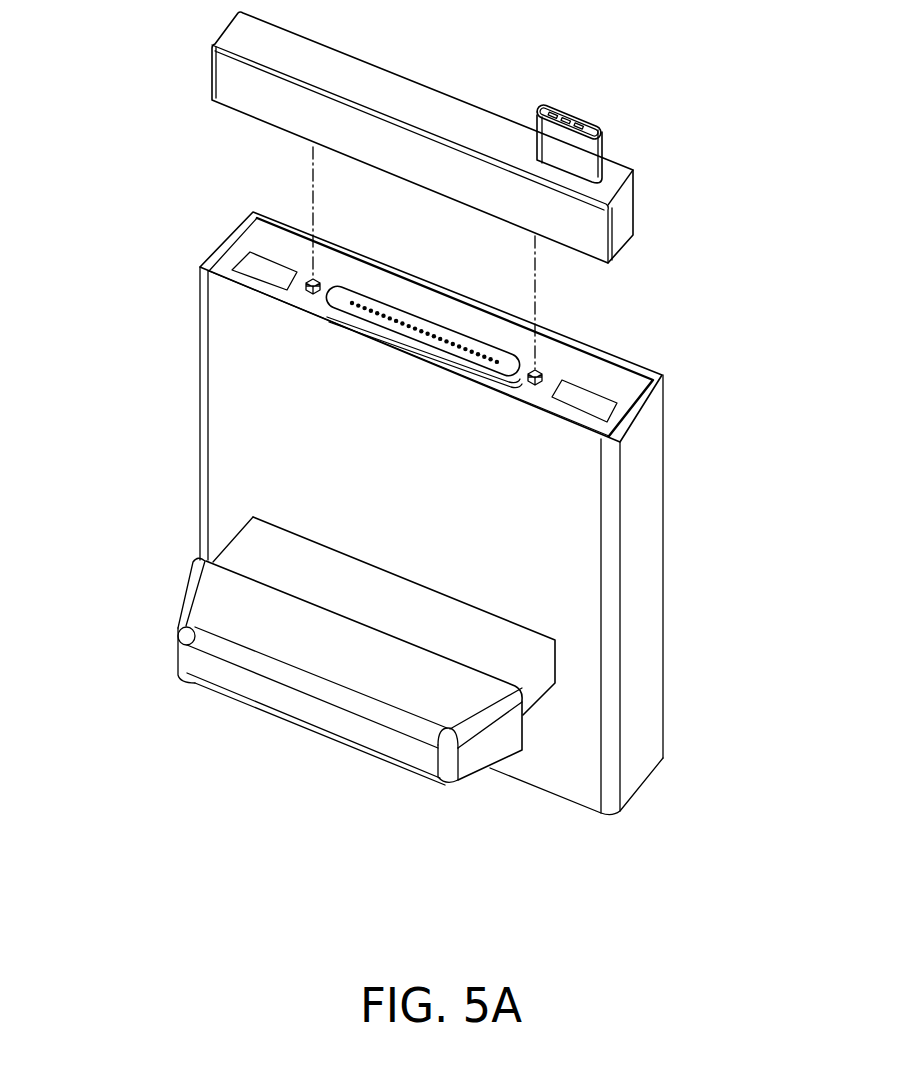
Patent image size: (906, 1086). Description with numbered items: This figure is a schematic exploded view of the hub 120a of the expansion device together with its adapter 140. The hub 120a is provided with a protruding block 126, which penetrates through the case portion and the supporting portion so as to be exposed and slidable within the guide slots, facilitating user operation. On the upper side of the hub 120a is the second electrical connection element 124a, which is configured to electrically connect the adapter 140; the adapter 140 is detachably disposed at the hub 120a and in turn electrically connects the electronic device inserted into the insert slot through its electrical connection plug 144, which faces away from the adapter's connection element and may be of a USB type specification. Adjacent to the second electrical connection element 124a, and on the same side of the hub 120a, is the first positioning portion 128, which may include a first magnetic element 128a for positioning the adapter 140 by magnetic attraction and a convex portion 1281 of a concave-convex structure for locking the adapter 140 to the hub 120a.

The hub 120a is at (573, 600).
The second electrical connection element 124a is at (443, 343).
The protruding block 126 is at (405, 688).
The first positioning portion 128 is at (572, 329).
The first magnetic element 128a is at (268, 268).
The convex portion 1281 is at (309, 276).
The adapter 140 is at (577, 227).
The electrical connection plug 144 is at (573, 153).